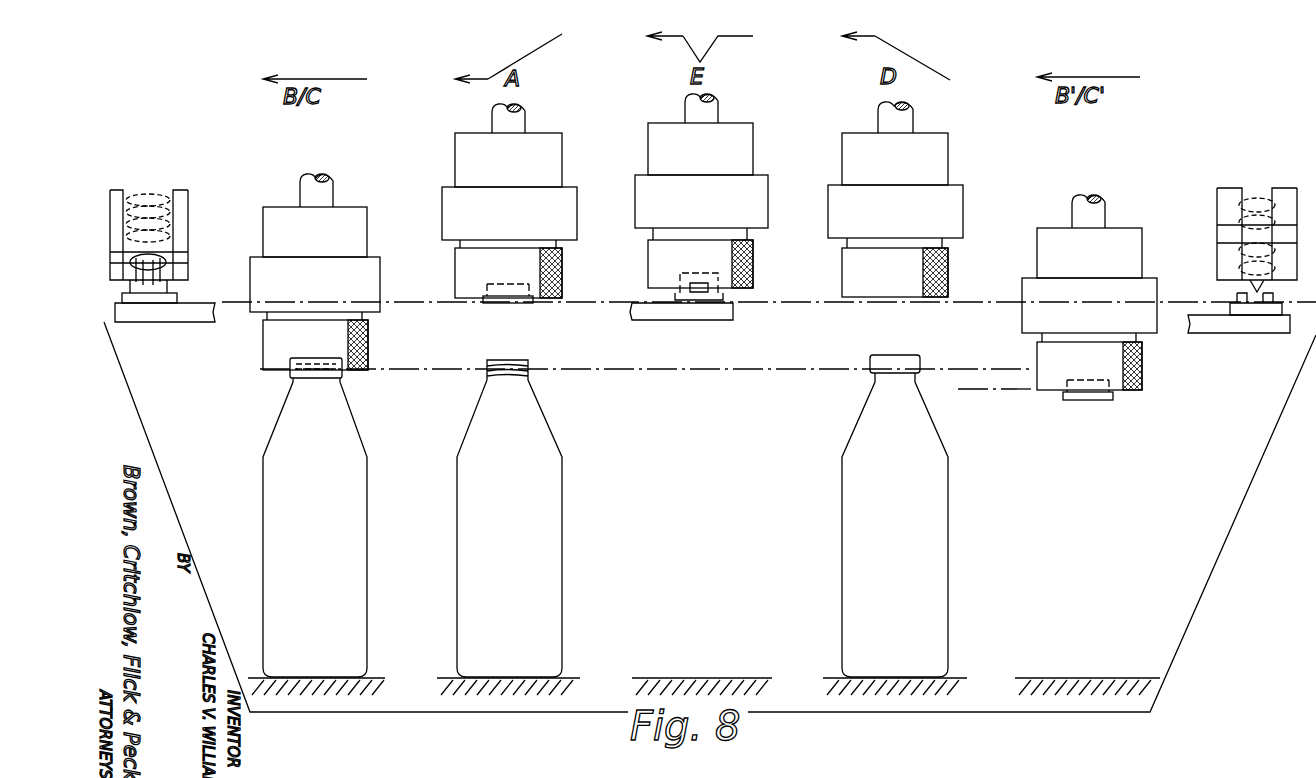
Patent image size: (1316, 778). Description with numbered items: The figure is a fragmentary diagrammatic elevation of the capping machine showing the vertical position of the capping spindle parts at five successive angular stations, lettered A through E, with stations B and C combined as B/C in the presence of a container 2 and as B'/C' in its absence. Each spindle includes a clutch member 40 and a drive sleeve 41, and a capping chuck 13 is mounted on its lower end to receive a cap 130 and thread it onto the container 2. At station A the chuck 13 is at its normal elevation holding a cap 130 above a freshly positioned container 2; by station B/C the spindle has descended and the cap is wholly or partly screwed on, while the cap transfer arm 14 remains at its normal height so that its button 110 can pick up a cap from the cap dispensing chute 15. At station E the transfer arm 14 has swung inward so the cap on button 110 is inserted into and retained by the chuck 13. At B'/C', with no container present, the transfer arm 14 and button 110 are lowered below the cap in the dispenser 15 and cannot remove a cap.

The container 2 is at (457, 530).
The capping chuck 13 is at (263, 346).
The cap transfer arm 14 is at (158, 313).
The cap dispensing chute 15 is at (188, 215).
The clutch member 40 is at (635, 205).
The drive sleeve 41 is at (323, 192).
The button 110 is at (170, 287).
The cap 130 is at (188, 265).